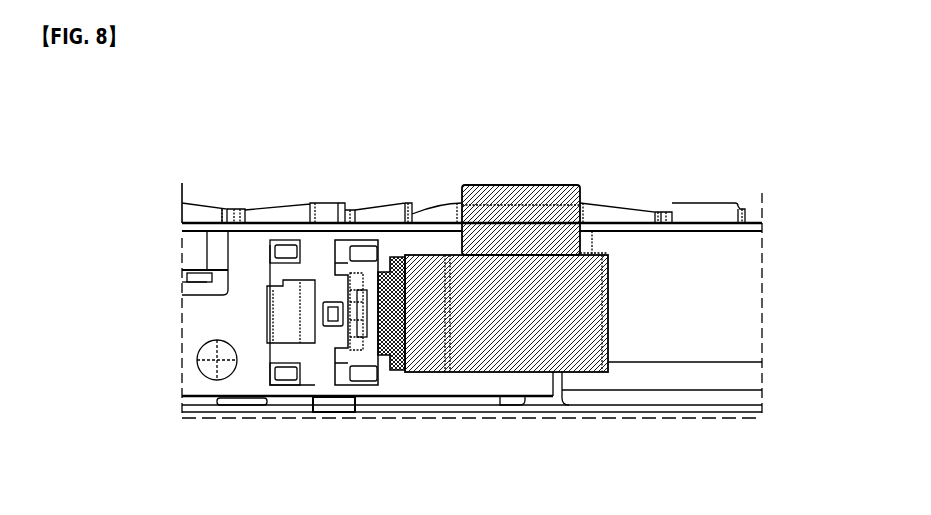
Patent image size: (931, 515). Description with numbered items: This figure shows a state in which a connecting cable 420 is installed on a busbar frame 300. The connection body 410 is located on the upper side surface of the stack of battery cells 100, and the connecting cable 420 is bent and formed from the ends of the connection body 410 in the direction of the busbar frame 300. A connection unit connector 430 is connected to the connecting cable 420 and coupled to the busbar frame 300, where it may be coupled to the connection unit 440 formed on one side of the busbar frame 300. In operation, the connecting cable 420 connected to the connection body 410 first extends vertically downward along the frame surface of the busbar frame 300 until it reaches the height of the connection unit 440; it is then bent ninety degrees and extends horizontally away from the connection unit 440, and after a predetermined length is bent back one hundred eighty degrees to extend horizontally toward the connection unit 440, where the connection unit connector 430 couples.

The battery cell 100 is at (697, 213).
The busbar frame 300 is at (730, 293).
The connection body 410 is at (518, 187).
The connecting cable 420 is at (505, 342).
The connection unit connector 430 is at (367, 313).
The connection unit 440 is at (313, 347).